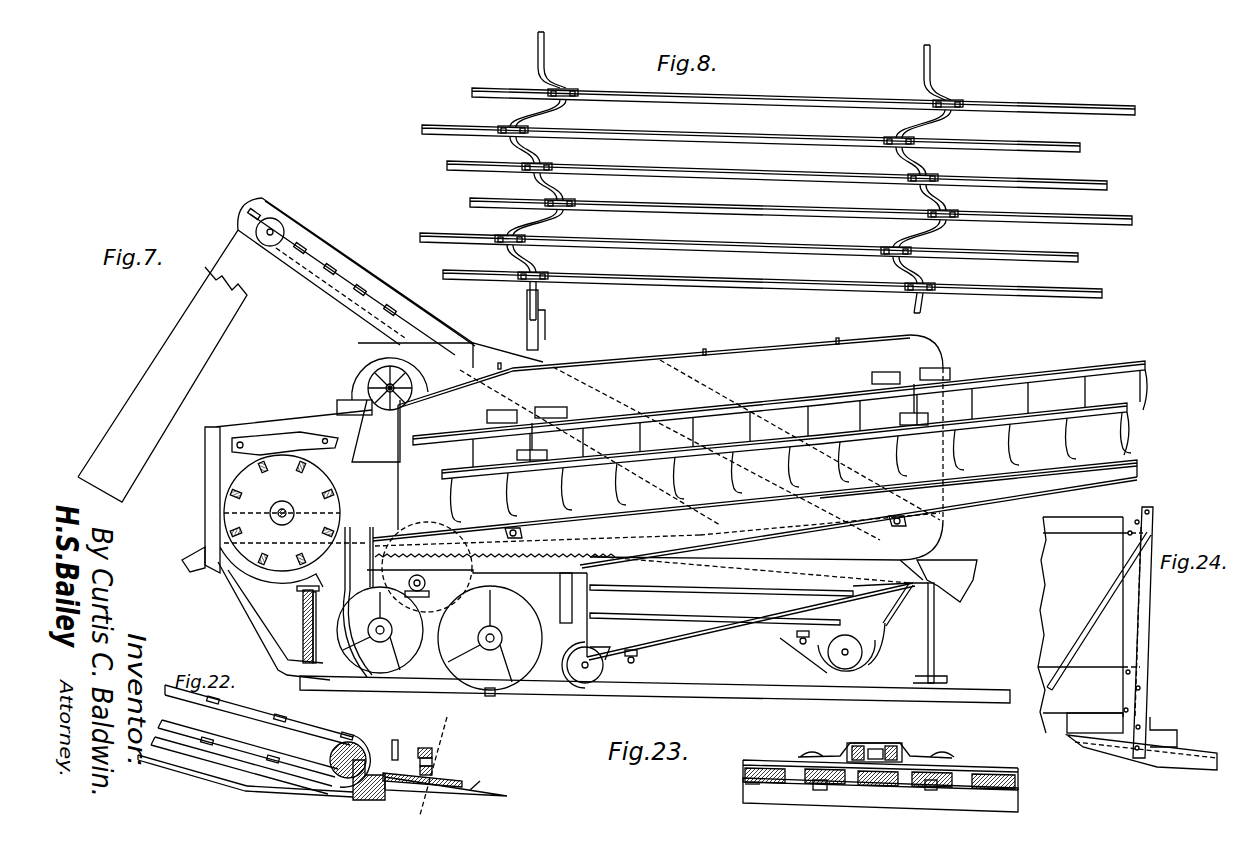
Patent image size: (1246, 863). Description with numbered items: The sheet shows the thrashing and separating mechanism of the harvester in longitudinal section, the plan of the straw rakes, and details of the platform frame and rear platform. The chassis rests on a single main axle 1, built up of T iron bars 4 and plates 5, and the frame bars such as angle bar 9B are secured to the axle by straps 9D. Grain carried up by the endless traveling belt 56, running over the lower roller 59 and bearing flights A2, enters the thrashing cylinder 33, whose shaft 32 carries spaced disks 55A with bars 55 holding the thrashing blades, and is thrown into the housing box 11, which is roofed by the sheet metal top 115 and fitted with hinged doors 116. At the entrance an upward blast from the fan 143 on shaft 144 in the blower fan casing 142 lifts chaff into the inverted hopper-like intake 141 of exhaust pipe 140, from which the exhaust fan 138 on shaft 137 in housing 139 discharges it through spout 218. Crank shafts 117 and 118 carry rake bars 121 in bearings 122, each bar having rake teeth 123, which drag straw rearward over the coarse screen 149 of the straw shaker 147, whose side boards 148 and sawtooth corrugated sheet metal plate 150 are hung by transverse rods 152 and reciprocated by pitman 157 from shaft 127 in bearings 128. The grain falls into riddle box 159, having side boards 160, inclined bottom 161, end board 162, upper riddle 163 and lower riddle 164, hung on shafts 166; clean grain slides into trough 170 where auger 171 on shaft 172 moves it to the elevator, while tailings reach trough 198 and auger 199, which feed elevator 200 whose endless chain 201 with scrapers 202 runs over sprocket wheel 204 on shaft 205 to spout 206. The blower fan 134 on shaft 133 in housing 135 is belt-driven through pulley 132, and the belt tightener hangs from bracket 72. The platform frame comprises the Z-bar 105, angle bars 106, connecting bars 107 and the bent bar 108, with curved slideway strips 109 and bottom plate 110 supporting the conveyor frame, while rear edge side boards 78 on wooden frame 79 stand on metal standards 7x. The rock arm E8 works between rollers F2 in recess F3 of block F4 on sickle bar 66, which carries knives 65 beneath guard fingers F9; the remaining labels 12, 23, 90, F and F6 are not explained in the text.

In FIG. 7, the main axle 1 is at (303, 610).
In FIG. 7, the T iron bars 4 is at (290, 657).
In FIG. 7, the plates 5 is at (303, 628).
In FIG. 24, the metal standards 7x is at (1150, 615).
In FIG. 7, the angle bar of frame member 9B is at (935, 575).
In FIG. 7, the straps 9D is at (255, 612).
In FIG. 7, the housing box 11 is at (655, 461).
In FIG. 7, the base sill 12 is at (680, 690).
In FIG. 22, the section line 23 is at (430, 762).
In FIG. 7, the shaft of thrashing cylinder 32 is at (283, 505).
In FIG. 7, the thrashing cylinder 33 is at (227, 470).
In FIG. 7, the bars 55 is at (328, 525).
In FIG. 7, the spaced disks 55A is at (237, 504).
In FIG. 22, the endless traveling belt 56 is at (250, 716).
In FIG. 22, the lower roller 59 is at (330, 757).
In FIG. 22, the knives 65 is at (428, 786).
In FIG. 23, the knives 65 is at (755, 761).
In FIG. 22, the sickle bar 66 is at (462, 800).
In FIG. 23, the sickle bar 66 is at (965, 768).
In FIG. 7, the bracket 72 is at (235, 580).
In FIG. 24, the rear edge side boards 78 is at (1043, 590).
In FIG. 24, the wooden frame 79 is at (1097, 530).
In FIG. 7, the support post 90 is at (934, 623).
In FIG. 22, the Z-bar 105 is at (355, 798).
In FIG. 23, the Z-bar 105 is at (780, 795).
In FIG. 24, the angle bars 106 is at (1085, 735).
In FIG. 24, the bars 107 is at (1177, 738).
In FIG. 24, the bar 108 is at (1165, 768).
In FIG. 22, the curved metal slideway strips 109 is at (225, 786).
In FIG. 22, the bottom plate 110 is at (155, 766).
In FIG. 7, the sheet metal top or roofing 115 is at (830, 342).
In FIG. 7, the hinged doors 116 is at (700, 350).
In FIG. 8, the crank shaft 117 is at (550, 80).
In FIG. 8, the crank shaft 118 is at (940, 84).
In FIG. 8, the rake bars 121 is at (815, 99).
In FIG. 7, the rake bars 121 is at (830, 452).
In FIG. 8, the bearings 122 is at (925, 281).
In FIG. 7, the bearings 122 is at (955, 372).
In FIG. 7, the rake teeth 123 is at (790, 470).
In FIG. 7, the shaft 127 is at (425, 583).
In FIG. 7, the bearings 128 is at (420, 575).
In FIG. 7, the pulley 132 is at (900, 524).
In FIG. 7, the shaft of blower fan 133 is at (497, 628).
In FIG. 7, the blower fan 134 is at (505, 652).
In FIG. 7, the housing 135 is at (495, 689).
In FIG. 7, the shaft of exhaust fan 137 is at (405, 380).
In FIG. 7, the exhaust fan 138 is at (384, 378).
In FIG. 7, the housing 139 is at (355, 400).
In FIG. 7, the exhaust pipe 140 is at (372, 382).
In FIG. 7, the inverted hopper-like intake 141 is at (384, 466).
In FIG. 7, the blower fan casing 142 is at (370, 677).
In FIG. 7, the fan 143 is at (374, 616).
In FIG. 7, the shaft 144 is at (384, 655).
In FIG. 7, the straw shaker 147 is at (1140, 468).
In FIG. 7, the side boards 148 is at (796, 524).
In FIG. 7, the coarse screen 149 is at (810, 503).
In FIG. 7, the corrugated sheet metal plate 150 is at (505, 557).
In FIG. 7, the transverse rods 152 is at (525, 535).
In FIG. 7, the pitman 157 is at (995, 500).
In FIG. 7, the riddle box 159 is at (862, 587).
In FIG. 7, the side boards 160 is at (787, 560).
In FIG. 7, the bottom 161 is at (740, 651).
In FIG. 7, the end board 162 is at (890, 615).
In FIG. 7, the upper riddle 163 is at (725, 587).
In FIG. 7, the lower riddle 164 is at (680, 611).
In FIG. 7, the shafts 166 is at (762, 660).
In FIG. 7, the trough 170 is at (592, 685).
In FIG. 7, the auger 171 is at (565, 690).
In FIG. 7, the shaft 172 is at (602, 656).
In FIG. 7, the trough 198 is at (872, 652).
In FIG. 7, the auger 199 is at (835, 672).
In FIG. 7, the elevator 200 is at (355, 268).
In FIG. 7, the endless chain 201 is at (350, 313).
In FIG. 7, the scrapers 202 is at (296, 291).
In FIG. 7, the sprocket wheel 204 is at (276, 244).
In FIG. 7, the shaft 205 is at (268, 222).
In FIG. 7, the pipe or spout 206 is at (182, 370).
In FIG. 7, the spout 218 is at (515, 352).
In FIG. 22, the flights A2 is at (215, 748).
In FIG. 22, the rock arm E8 is at (394, 736).
In FIG. 23, the rock arm E8 is at (880, 757).
In FIG. 22, the bolt F is at (414, 788).
In FIG. 22, the rollers F2 is at (434, 758).
In FIG. 23, the rollers F2 is at (905, 745).
In FIG. 23, the recess F3 is at (845, 752).
In FIG. 22, the block F4 is at (422, 748).
In FIG. 23, the block F4 is at (875, 745).
In FIG. 23, the bolt F6 is at (905, 772).
In FIG. 22, the guard fingers F9 is at (486, 780).
In FIG. 23, the guard fingers F9 is at (745, 780).